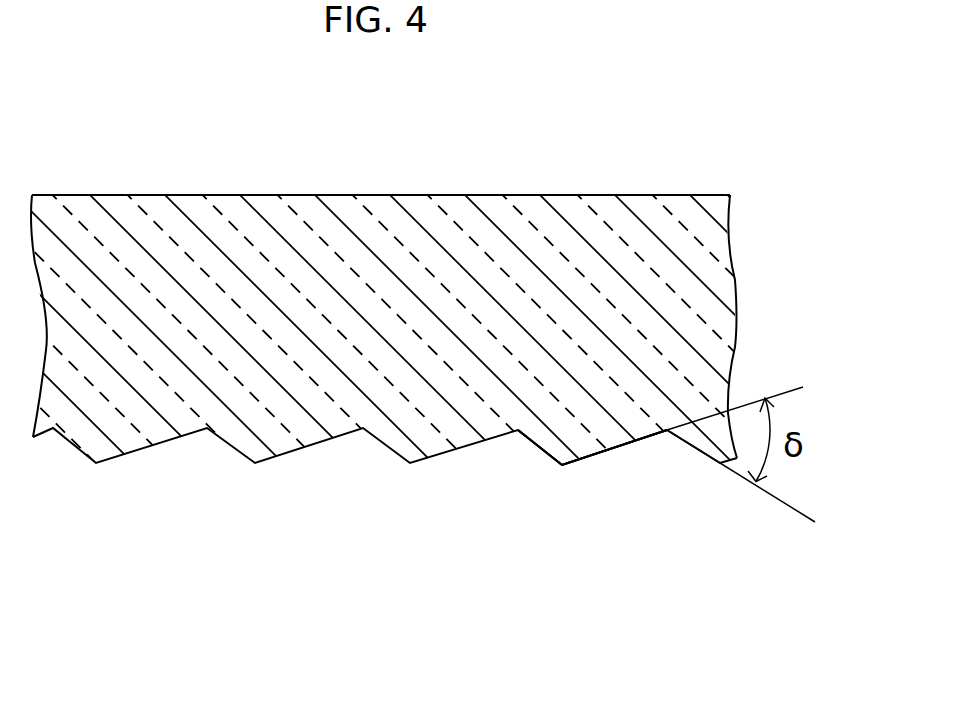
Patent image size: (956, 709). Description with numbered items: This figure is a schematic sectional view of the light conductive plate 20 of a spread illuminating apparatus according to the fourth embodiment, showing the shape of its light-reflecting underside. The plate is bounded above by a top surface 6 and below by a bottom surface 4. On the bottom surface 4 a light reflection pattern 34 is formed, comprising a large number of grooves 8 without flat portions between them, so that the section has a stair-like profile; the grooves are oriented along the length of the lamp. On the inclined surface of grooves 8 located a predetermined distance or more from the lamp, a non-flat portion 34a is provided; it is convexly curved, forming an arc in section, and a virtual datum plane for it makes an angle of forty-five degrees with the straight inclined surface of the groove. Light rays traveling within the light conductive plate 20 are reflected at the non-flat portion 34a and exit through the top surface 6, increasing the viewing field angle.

The light conductive plate 20 is at (350, 197).
The top surface 6 is at (488, 197).
The bottom surface 4 is at (112, 462).
The light reflection pattern 34 is at (582, 495).
The non-flat portion 34a is at (527, 445).
The groove 8 is at (663, 453).